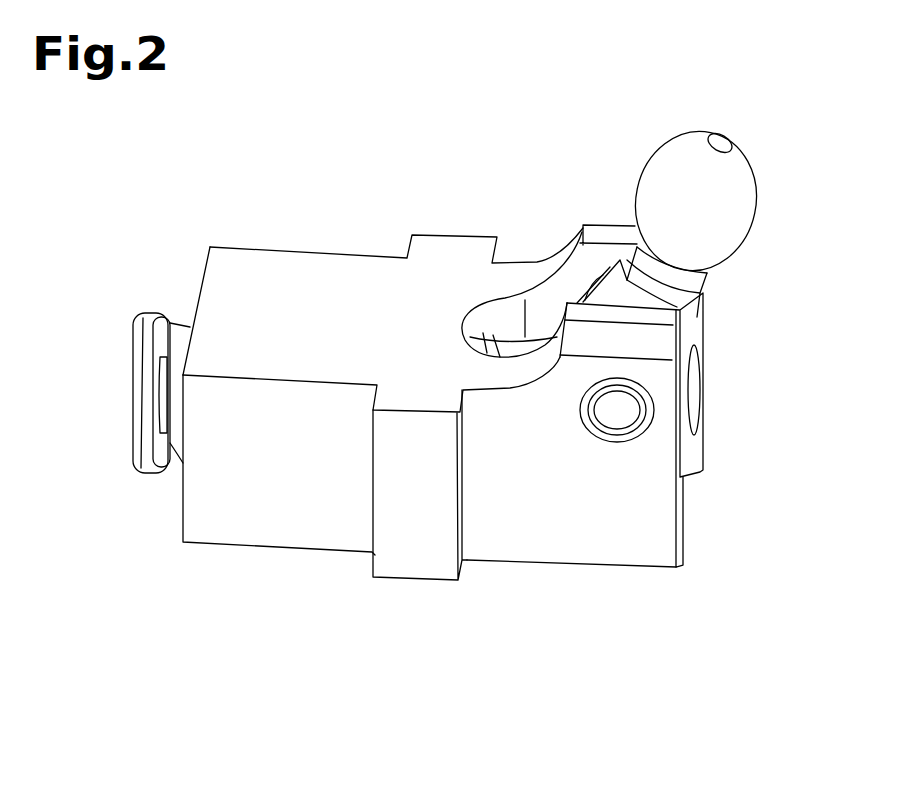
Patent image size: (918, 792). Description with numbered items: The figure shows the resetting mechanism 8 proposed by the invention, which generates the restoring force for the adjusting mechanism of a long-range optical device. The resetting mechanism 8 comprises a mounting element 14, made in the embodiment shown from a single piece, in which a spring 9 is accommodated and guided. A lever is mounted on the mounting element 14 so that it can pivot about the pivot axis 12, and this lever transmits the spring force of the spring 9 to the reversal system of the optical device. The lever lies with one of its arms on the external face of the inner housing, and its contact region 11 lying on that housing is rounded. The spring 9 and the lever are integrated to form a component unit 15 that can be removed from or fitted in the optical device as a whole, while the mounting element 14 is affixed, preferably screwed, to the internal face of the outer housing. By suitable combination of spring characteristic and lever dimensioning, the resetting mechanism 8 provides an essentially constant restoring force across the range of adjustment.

The resetting mechanism 8 is at (522, 240).
The spring 9 is at (180, 322).
The contact region 11 is at (675, 143).
The pivot axis 12 is at (617, 412).
The mounting element 14 is at (278, 500).
The component unit 15 is at (335, 185).